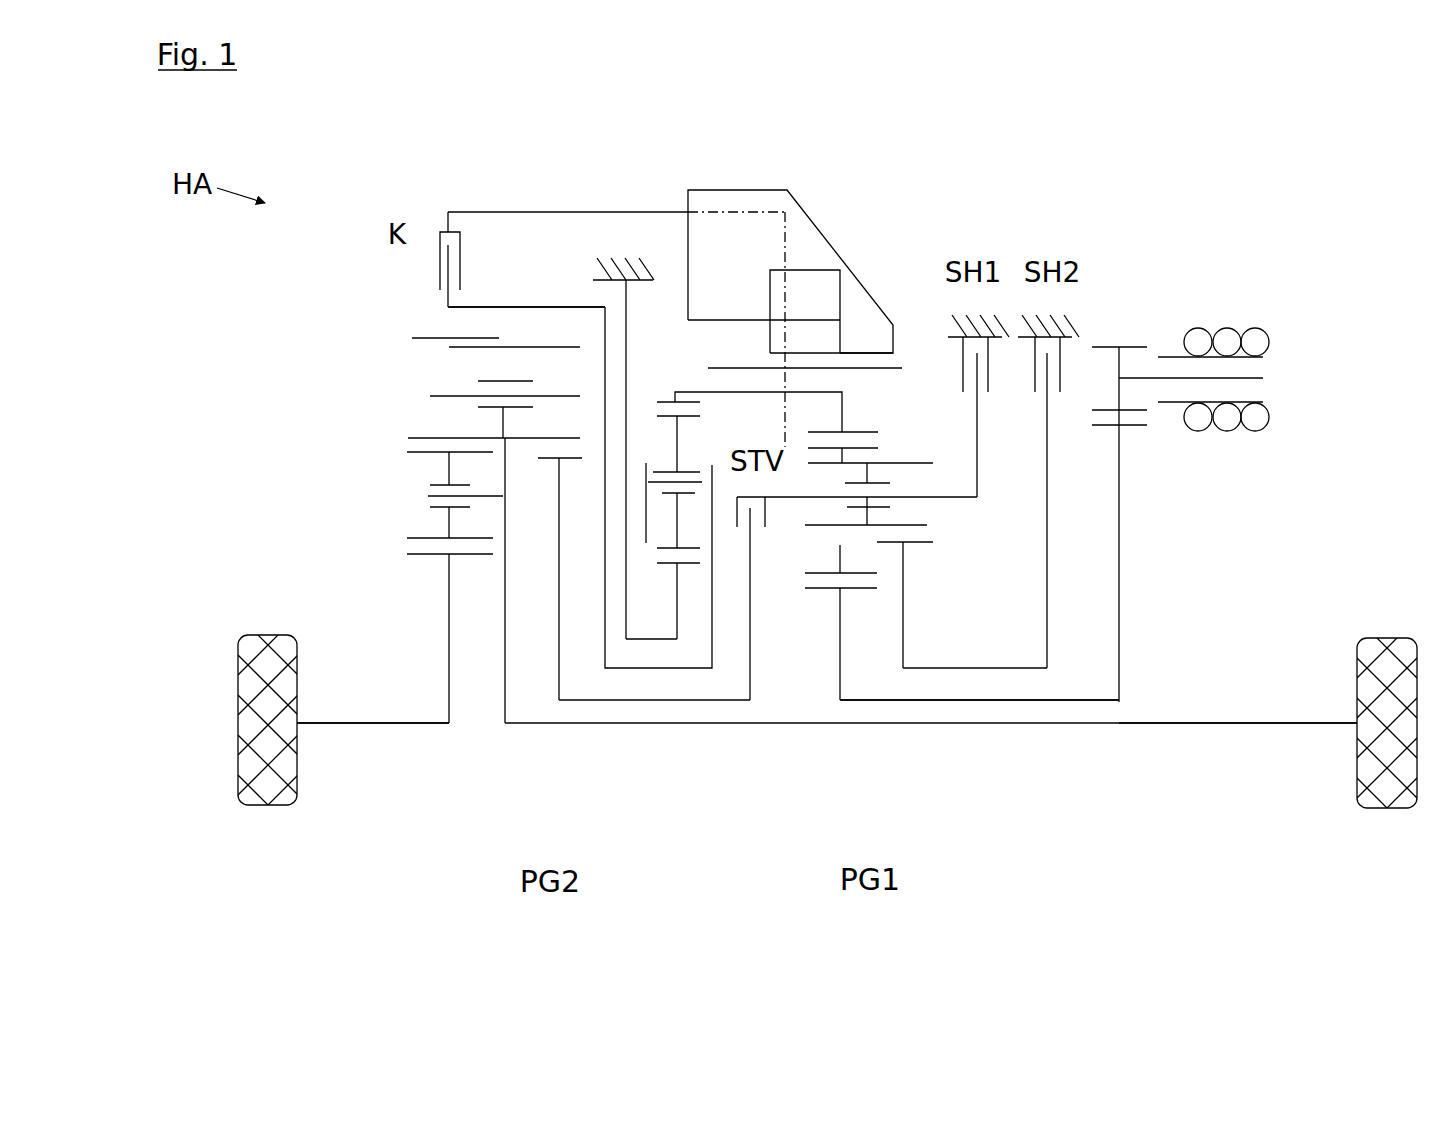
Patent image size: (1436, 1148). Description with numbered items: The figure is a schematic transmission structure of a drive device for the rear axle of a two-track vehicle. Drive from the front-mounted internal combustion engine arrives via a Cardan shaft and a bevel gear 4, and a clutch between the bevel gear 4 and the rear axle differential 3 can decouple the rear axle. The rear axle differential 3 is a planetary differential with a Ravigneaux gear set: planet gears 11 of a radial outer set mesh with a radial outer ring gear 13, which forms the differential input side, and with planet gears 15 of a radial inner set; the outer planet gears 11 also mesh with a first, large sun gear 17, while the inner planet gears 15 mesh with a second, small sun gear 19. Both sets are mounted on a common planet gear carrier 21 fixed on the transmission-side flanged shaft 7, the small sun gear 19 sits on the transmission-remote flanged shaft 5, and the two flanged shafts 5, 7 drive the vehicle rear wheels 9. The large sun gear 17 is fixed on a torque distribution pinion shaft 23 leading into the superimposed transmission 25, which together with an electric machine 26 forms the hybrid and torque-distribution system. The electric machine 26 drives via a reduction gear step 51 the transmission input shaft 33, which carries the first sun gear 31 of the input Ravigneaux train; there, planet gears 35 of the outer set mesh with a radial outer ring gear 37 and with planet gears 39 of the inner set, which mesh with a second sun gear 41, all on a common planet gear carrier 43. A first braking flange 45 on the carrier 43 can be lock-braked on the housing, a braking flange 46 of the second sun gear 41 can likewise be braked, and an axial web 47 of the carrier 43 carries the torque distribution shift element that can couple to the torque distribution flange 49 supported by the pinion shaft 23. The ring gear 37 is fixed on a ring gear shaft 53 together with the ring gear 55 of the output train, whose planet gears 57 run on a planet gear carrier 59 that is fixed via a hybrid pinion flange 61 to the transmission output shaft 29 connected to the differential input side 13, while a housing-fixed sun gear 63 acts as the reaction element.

The rear axle differential 3 is at (202, 260).
The bevel gear 4 is at (703, 187).
The transmission-remote flanged shaft 5 is at (372, 723).
The transmission-side flanged shaft 7 is at (1260, 723).
The vehicle rear wheels 9 is at (238, 730).
The planet gears of the radial outer planet gear set 11 is at (449, 348).
The radial outer ring gear 13 is at (412, 338).
The planet gears of the radial inner planet gear set 15 is at (409, 451).
The first, large sun gear 17 is at (563, 540).
The second, small sun gear 19 is at (447, 600).
The common planet gear carrier 21 is at (433, 495).
The torque distribution pinion shaft 23 is at (695, 702).
The superimposed transmission 25 is at (497, 883).
The electric machine 26 is at (1255, 330).
The transmission output shaft 29 is at (529, 307).
The first sun gear 31 is at (842, 647).
The transmission input shaft 33 is at (1097, 702).
The planet gears of the radial outer planet gear set 35 is at (839, 590).
The radial outer ring gear 37 is at (820, 432).
The planet gears of the radial inner planet gear set 39 is at (922, 525).
The second sun gear 41 is at (903, 545).
The common planet gear carrier 43 is at (826, 497).
The first braking flange 45 is at (977, 450).
The braking flange 46 is at (1047, 487).
The axial web 47 is at (790, 392).
The torque distribution flange 49 is at (748, 685).
The reduction gear step 51 is at (1124, 536).
The ring gear shaft 53 is at (803, 392).
The ring gear of the output planetary gear train 55 is at (659, 403).
The planet gears 57 is at (657, 549).
The planet gear carrier 59 is at (647, 518).
The hybrid pinion flange 61 is at (712, 467).
The housing-fixed sun gear 63 is at (634, 695).